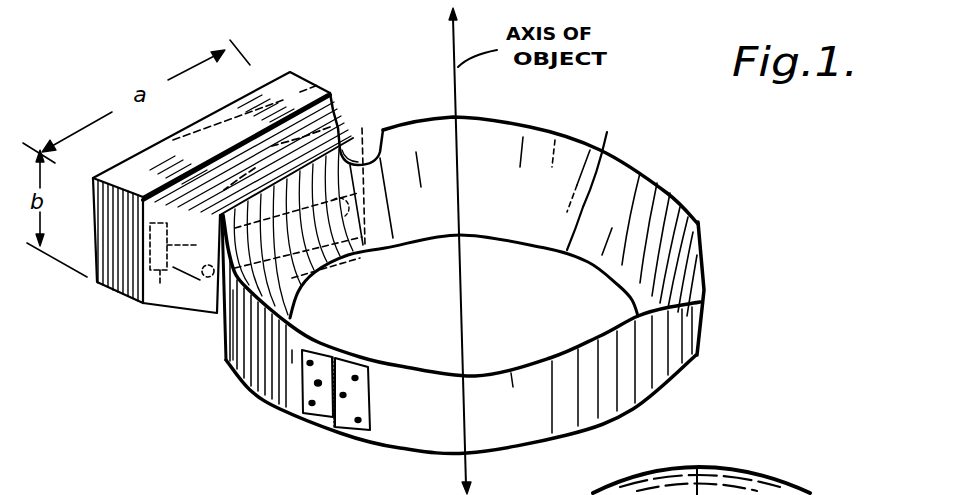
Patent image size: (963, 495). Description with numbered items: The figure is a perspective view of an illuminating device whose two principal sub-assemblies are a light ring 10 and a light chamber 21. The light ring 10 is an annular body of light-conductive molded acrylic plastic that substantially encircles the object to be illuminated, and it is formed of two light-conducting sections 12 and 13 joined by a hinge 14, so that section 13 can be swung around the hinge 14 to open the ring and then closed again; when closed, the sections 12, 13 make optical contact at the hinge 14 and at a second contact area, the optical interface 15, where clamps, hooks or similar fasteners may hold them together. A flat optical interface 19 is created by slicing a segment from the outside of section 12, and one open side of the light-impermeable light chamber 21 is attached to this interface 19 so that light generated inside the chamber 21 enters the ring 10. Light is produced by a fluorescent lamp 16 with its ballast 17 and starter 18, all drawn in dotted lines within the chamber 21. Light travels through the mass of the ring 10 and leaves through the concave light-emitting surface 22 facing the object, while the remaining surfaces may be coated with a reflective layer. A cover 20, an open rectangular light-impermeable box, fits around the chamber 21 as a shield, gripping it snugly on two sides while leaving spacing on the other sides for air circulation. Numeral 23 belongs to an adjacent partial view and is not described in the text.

The light ring 10 is at (716, 304).
The section 12 is at (287, 398).
The section 13 is at (530, 428).
The hinge 14 is at (343, 424).
The optical interface 15 is at (606, 174).
The fluorescent lamp 16 is at (207, 313).
The ballast 17 is at (173, 290).
The starter 18 is at (330, 127).
The optical interface 19 is at (387, 128).
The cover 20 is at (163, 160).
The light chamber 21 is at (243, 90).
The light-emitting surface 22 is at (698, 221).
The element of second figure 23 is at (895, 490).